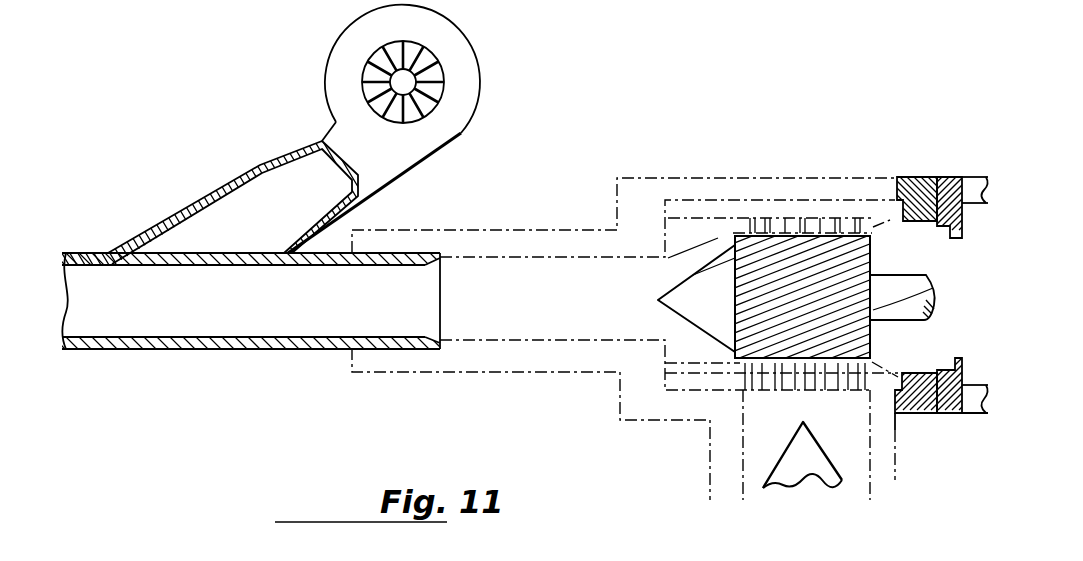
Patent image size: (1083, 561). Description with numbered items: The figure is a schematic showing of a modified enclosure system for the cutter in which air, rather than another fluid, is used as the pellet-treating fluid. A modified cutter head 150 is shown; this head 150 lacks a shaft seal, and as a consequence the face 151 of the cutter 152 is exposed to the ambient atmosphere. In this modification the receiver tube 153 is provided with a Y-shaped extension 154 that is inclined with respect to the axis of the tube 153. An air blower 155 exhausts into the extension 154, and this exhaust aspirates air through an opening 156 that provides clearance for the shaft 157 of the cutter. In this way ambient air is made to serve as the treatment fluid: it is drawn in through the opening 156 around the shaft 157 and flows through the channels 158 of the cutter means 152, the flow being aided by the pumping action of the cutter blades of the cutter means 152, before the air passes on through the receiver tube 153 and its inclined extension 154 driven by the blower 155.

The cutter head 150 is at (917, 178).
The face 151 is at (934, 288).
The cutter 152 is at (880, 331).
The receiver tube 153 is at (289, 318).
The Y-shaped extension 154 is at (232, 205).
The air blower 155 is at (453, 50).
The opening 156 is at (952, 320).
The shaft 157 is at (898, 283).
The channels 158 is at (755, 277).